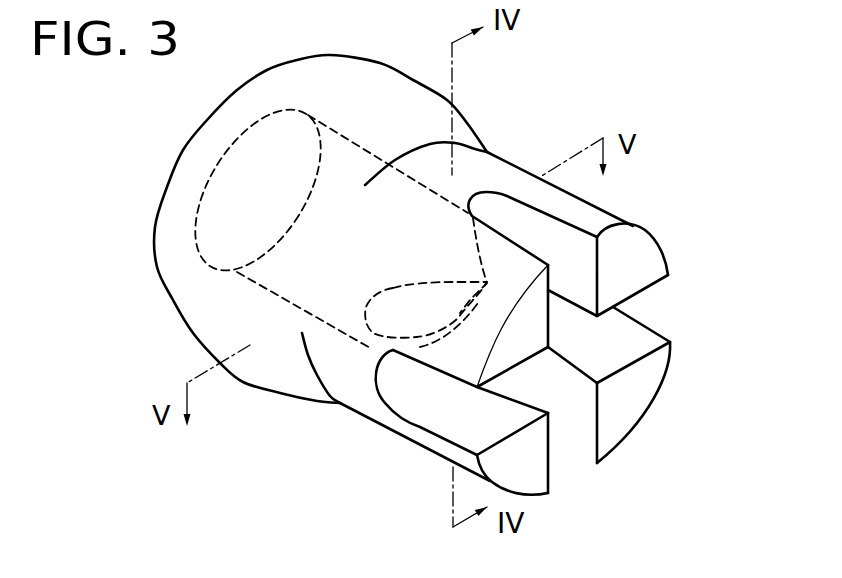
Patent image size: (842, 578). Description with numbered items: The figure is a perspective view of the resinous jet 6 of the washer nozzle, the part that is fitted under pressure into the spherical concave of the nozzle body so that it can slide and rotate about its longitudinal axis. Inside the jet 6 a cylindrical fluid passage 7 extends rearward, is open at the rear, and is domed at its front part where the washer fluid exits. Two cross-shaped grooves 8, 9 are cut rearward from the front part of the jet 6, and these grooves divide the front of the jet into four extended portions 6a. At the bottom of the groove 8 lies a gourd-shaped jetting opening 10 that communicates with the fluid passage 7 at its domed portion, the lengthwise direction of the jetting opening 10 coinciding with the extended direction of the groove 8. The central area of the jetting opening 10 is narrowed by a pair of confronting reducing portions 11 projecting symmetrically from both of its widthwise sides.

The jet 6 is at (327, 50).
The extended portion 6a is at (623, 230).
The fluid passage 7 is at (320, 221).
The groove 8 is at (648, 333).
The groove 9 is at (580, 447).
The jetting opening 10 is at (395, 290).
The reducing portion 11 is at (488, 265).